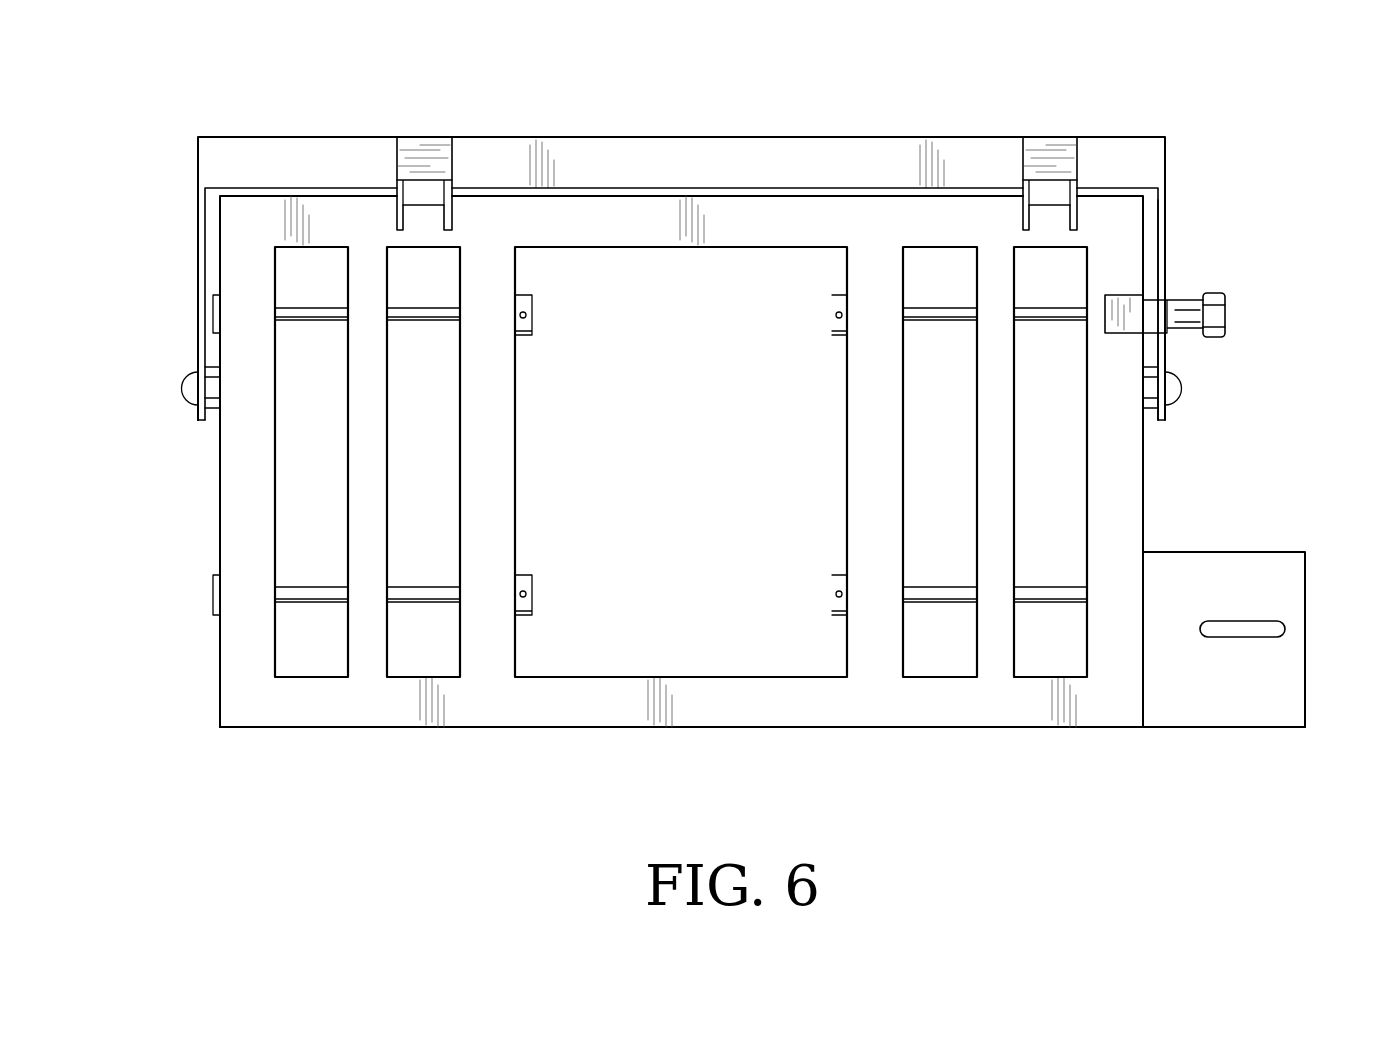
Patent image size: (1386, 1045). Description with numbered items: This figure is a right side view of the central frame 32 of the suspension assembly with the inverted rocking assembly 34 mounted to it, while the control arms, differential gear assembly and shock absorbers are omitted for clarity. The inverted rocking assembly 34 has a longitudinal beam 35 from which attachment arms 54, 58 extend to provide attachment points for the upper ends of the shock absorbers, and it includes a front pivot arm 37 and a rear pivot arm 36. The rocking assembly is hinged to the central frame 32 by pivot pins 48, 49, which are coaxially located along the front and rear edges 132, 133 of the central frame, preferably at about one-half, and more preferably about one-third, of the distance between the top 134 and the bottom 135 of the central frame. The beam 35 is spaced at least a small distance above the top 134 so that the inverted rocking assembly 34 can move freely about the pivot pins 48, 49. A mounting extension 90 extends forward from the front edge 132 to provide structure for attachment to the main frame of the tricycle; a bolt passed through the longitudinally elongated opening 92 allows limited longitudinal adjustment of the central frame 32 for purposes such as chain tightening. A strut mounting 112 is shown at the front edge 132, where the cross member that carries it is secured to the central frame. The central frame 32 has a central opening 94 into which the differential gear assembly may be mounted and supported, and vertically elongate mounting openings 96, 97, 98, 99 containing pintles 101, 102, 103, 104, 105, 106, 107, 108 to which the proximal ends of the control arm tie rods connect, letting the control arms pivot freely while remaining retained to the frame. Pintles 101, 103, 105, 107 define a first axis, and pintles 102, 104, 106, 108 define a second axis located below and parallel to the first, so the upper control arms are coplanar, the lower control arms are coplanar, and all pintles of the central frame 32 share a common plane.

The inverted rocking assembly 34 is at (198, 163).
The longitudinal beam 35 is at (660, 137).
The top 134 is at (802, 190).
The central frame 32 is at (1113, 238).
The rear edge 133 is at (220, 453).
The front edge 132 is at (1145, 252).
The front pivot arm 37 is at (1165, 268).
The rear pivot arm 36 is at (198, 300).
The bottom 135 is at (555, 727).
The attachment arm 54 is at (408, 152).
The attachment arm 58 is at (1035, 150).
The vertically elongate mounting opening 96 is at (313, 678).
The vertically elongate mounting opening 97 is at (413, 678).
The central opening 94 is at (710, 607).
The vertically elongate mounting opening 98 is at (940, 678).
The vertically elongate mounting opening 99 is at (1043, 678).
The pintle 101 is at (315, 323).
The pintle 102 is at (315, 590).
The pintle 103 is at (420, 322).
The pintle 104 is at (420, 590).
The pintle 105 is at (937, 322).
The pintle 106 is at (935, 590).
The pintle 107 is at (1040, 322).
The pintle 108 is at (1047, 587).
The pivot pin 48 is at (185, 388).
The pivot pin 49 is at (1178, 388).
The strut mounting 112 is at (1225, 315).
The mounting extension 90 is at (1262, 590).
The longitudinally elongated opening 92 is at (1241, 630).